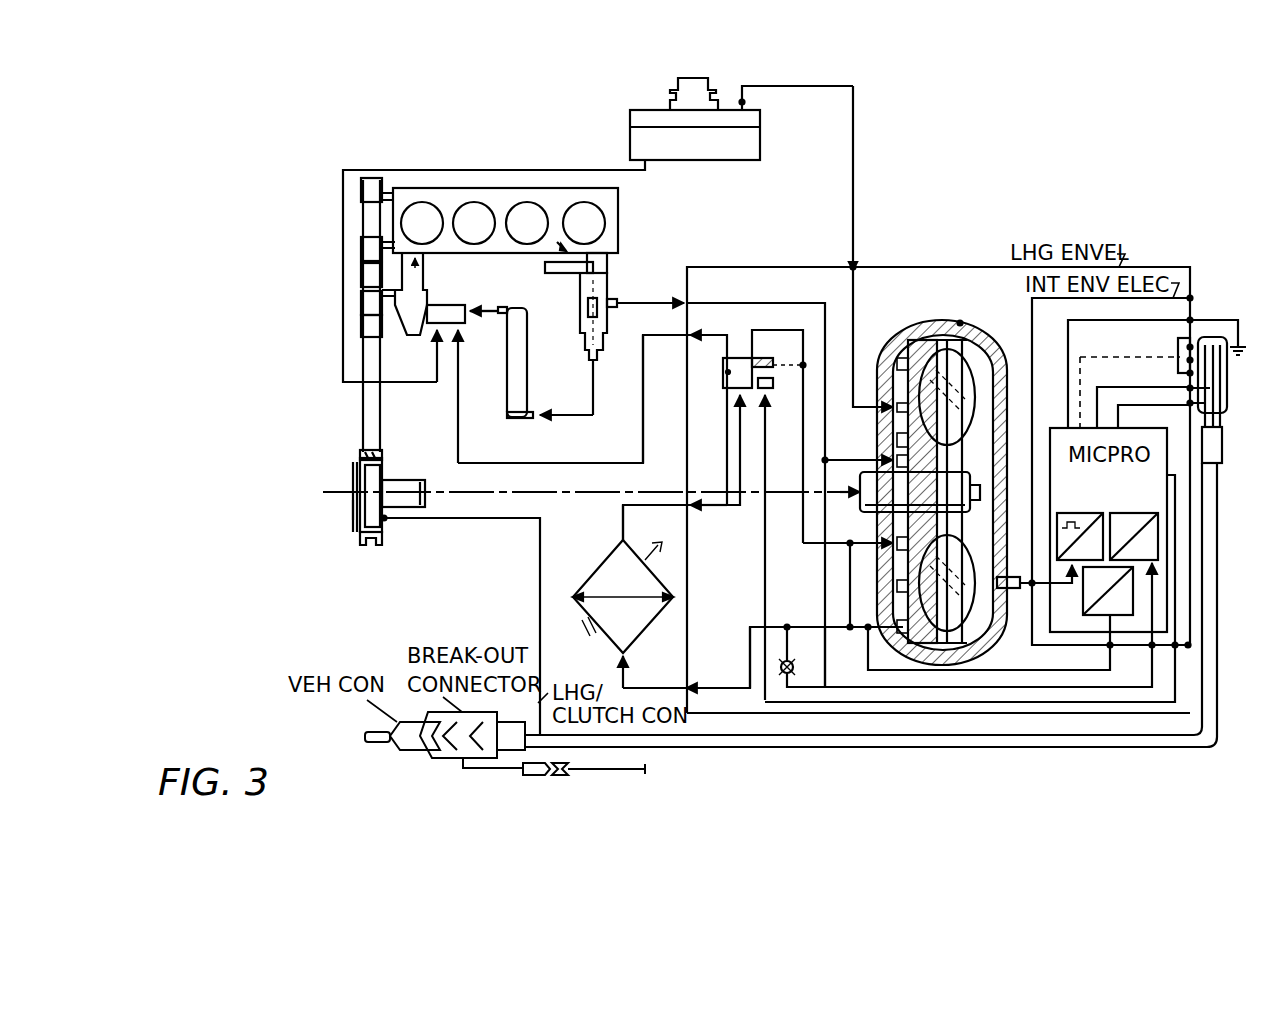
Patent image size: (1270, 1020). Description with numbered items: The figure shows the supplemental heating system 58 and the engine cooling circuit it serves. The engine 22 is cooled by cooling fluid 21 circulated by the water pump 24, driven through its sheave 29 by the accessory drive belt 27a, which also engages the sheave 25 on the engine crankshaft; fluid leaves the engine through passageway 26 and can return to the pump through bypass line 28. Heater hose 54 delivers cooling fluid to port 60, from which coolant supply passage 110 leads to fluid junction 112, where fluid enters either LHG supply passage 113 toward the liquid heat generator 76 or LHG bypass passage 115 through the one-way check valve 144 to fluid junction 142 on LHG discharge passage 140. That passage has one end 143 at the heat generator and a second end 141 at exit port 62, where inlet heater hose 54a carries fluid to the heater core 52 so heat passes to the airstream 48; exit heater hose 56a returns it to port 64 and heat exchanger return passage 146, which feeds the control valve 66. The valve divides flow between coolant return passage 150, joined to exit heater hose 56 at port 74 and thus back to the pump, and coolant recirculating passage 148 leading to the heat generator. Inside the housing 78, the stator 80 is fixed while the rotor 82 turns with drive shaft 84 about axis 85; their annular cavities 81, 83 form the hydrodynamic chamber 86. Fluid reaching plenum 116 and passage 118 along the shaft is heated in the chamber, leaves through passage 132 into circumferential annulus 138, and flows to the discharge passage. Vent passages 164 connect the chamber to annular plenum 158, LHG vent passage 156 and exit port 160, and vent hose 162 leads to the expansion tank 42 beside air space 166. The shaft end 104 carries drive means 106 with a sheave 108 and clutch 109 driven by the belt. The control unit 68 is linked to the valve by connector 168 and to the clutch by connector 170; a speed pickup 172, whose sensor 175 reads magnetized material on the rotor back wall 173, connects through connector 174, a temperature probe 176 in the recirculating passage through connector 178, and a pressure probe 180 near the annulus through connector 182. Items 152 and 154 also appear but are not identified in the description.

The cooling fluid 21 is at (636, 130).
The engine 22 is at (415, 188).
The water pump 24 is at (482, 288).
The sheave 25 is at (362, 192).
The passageway 26 is at (598, 268).
The accessory drive belt 27a is at (358, 395).
The bypass line 28 is at (513, 274).
The sheave 29 is at (362, 302).
The expansion tank 42 is at (655, 102).
The airstream 48 is at (584, 622).
The heater core 52 is at (596, 568).
The heater hose 54 is at (618, 302).
The inlet heater hose 54a is at (620, 668).
The exit heater hose 56 is at (480, 463).
The exit heater hose 56a is at (620, 518).
The supplemental heating system 58 is at (1165, 265).
The port 60 is at (683, 300).
The exit port 62 is at (680, 686).
The port 64 is at (683, 503).
The control valve 66 is at (725, 372).
The control unit 68 is at (1168, 453).
The port 74 is at (688, 348).
The liquid heat generator 76 is at (960, 322).
The housing 78 is at (877, 266).
The stator 80 is at (940, 335).
The annular cavity 81 is at (947, 491).
The rotor 82 is at (1004, 358).
The annular cavity 83 is at (947, 583).
The drive shaft 84 is at (404, 478).
The axis 85 is at (350, 488).
The hydrodynamic chamber 86 is at (972, 343).
The end 104 is at (407, 520).
The drive means 106 is at (350, 512).
The sheave 108 is at (362, 540).
The clutch 109 is at (368, 476).
The coolant supply passage 110 is at (707, 300).
The fluid junction 112 is at (822, 462).
The LHG supply passage 113 is at (848, 490).
The LHG bypass passage 115 is at (826, 580).
The plenum 116 is at (872, 543).
The passage 118 is at (938, 486).
The passage 132 is at (935, 655).
The circumferential annulus 138 is at (918, 325).
The LHG discharge passage 140 is at (750, 650).
The second end 141 is at (730, 700).
The fluid junction 142 is at (785, 624).
The one end 143 is at (905, 655).
The check valve 144 is at (787, 682).
The heat exchanger return passage 146 is at (720, 508).
The coolant recirculating passage 148 is at (770, 330).
The coolant return passage 150 is at (725, 338).
The line 152 is at (868, 624).
The shaft portion 154 is at (935, 502).
The LHG vent passage 156 is at (850, 290).
The annular plenum 158 is at (880, 424).
The exit port 160 is at (853, 262).
The vent hose 162 is at (862, 120).
The vent passages 164 is at (897, 363).
The air space 166 is at (762, 120).
The connector 168 is at (1178, 578).
The connector 170 is at (1080, 368).
The speed pickup 172 is at (1040, 622).
The back wall 173 is at (985, 640).
The connector 174 is at (1082, 598).
The sensor 175 is at (1012, 580).
The temperature probe 176 is at (800, 560).
The connector 178 is at (1082, 695).
The pressure probe 180 is at (868, 635).
The connector 182 is at (1100, 700).